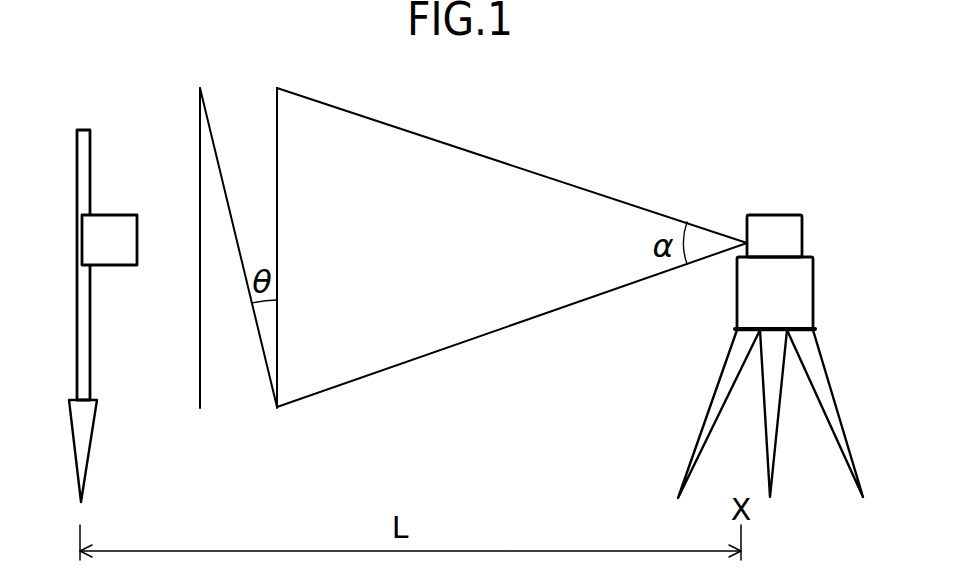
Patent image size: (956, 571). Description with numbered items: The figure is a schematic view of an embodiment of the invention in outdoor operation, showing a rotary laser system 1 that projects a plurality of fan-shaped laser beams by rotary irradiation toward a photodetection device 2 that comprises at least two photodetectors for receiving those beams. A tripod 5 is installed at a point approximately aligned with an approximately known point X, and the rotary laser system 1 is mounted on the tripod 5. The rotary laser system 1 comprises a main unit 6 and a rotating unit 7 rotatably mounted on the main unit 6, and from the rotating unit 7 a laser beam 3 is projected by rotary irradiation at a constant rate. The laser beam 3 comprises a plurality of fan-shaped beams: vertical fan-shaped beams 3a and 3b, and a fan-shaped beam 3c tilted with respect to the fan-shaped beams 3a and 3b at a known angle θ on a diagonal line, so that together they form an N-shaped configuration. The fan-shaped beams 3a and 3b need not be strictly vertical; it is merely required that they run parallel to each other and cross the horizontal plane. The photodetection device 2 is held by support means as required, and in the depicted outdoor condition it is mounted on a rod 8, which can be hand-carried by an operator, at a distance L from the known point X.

The rotary laser system 1 is at (740, 298).
The photodetection device 2 is at (118, 214).
The laser beam 3 is at (566, 178).
The vertical fan-shaped beam 3a is at (277, 237).
The vertical fan-shaped beam 3b is at (200, 362).
The tilted fan-shaped beam 3c is at (223, 188).
The tripod 5 is at (707, 412).
The main unit 6 is at (737, 296).
The rotating unit 7 is at (777, 215).
The rod 8 is at (77, 318).